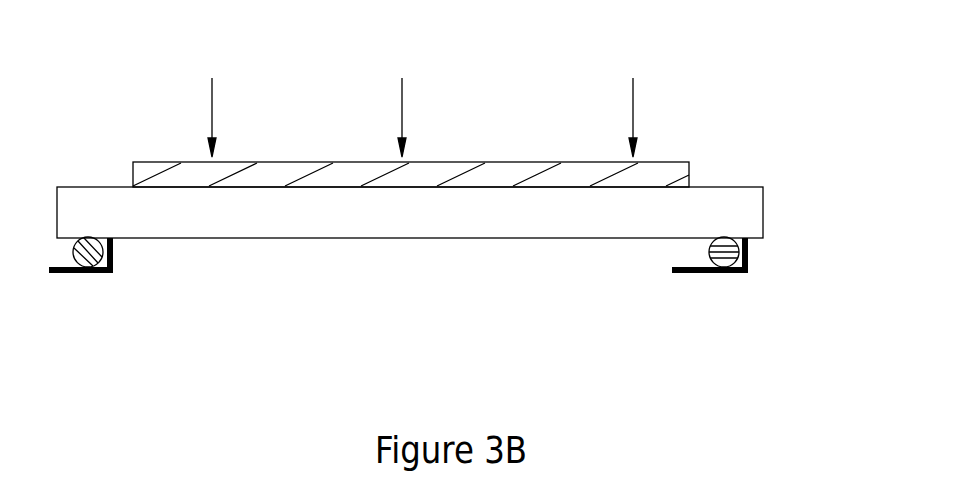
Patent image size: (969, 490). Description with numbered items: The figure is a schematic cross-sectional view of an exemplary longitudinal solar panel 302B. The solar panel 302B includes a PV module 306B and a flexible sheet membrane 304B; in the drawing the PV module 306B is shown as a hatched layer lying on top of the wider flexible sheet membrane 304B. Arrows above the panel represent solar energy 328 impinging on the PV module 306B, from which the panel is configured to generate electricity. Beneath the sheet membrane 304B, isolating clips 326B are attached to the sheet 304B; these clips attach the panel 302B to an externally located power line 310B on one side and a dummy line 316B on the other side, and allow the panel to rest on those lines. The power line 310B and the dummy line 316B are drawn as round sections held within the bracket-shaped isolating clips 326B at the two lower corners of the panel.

The solar panel 302B is at (663, 50).
The flexible sheet membrane 304B is at (262, 228).
The PV module 306B is at (434, 162).
The solar energy 328 is at (212, 117).
The dummy line 316B is at (75, 278).
The isolating clips 326B is at (115, 257).
The power line 310B is at (723, 273).